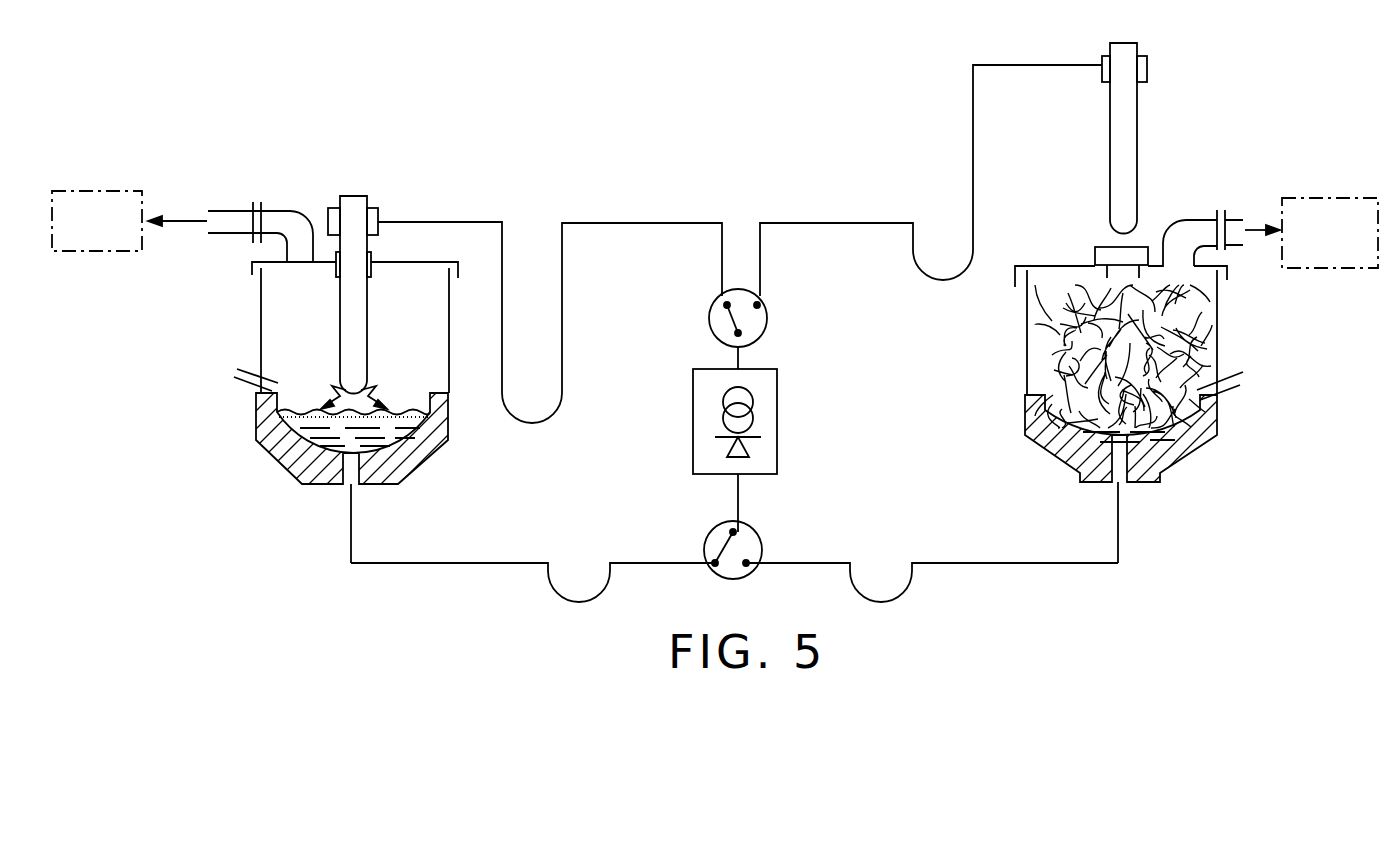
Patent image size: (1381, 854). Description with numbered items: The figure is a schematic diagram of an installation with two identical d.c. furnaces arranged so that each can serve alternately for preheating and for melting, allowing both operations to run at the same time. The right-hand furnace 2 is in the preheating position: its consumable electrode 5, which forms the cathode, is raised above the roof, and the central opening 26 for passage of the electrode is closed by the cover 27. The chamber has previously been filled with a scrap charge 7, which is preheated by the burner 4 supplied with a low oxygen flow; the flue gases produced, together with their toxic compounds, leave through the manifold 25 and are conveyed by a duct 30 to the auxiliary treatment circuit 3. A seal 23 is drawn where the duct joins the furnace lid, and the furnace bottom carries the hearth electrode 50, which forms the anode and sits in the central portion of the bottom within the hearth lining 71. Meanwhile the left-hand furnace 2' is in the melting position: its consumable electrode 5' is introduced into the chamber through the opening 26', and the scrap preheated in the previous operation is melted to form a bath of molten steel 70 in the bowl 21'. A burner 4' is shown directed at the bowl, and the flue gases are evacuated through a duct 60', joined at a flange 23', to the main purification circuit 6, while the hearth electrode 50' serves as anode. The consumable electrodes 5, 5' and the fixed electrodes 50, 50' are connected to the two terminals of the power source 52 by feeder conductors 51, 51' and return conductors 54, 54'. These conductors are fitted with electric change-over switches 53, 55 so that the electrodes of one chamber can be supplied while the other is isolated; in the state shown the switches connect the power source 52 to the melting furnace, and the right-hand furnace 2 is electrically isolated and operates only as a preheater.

The main purification circuit 6 is at (86, 237).
The duct 60' is at (260, 210).
The pipe flange 23' is at (223, 238).
The consumable electrode 5' is at (343, 283).
The opening 26' is at (355, 257).
The left-hand furnace 2' is at (308, 330).
The injector 4' is at (241, 361).
The bowl 21' is at (315, 438).
The bath of molten steel 70 is at (320, 445).
The hearth electrode 50' is at (316, 523).
The feeder conductor 51' is at (550, 322).
The feeder conductor 51 is at (931, 180).
The change-over switch 53 is at (768, 313).
The power source 52 is at (780, 441).
The change-over switch 55 is at (762, 536).
The return conductor 54' is at (533, 557).
The return conductor 54 is at (932, 561).
The consumable electrode 5 is at (1146, 138).
The cover 27 is at (1100, 247).
The central opening 26 is at (1043, 297).
The manifold 25 is at (1196, 220).
The duct 30 is at (1237, 212).
The lid seal 23 is at (1231, 282).
The auxiliary treatment circuit 3 is at (1322, 247).
The right-hand furnace 2 is at (1162, 332).
The scrap charge 7 is at (1062, 360).
The burner 4 is at (1233, 372).
The crucible 71 is at (1167, 465).
The hearth electrode 50 is at (1157, 522).